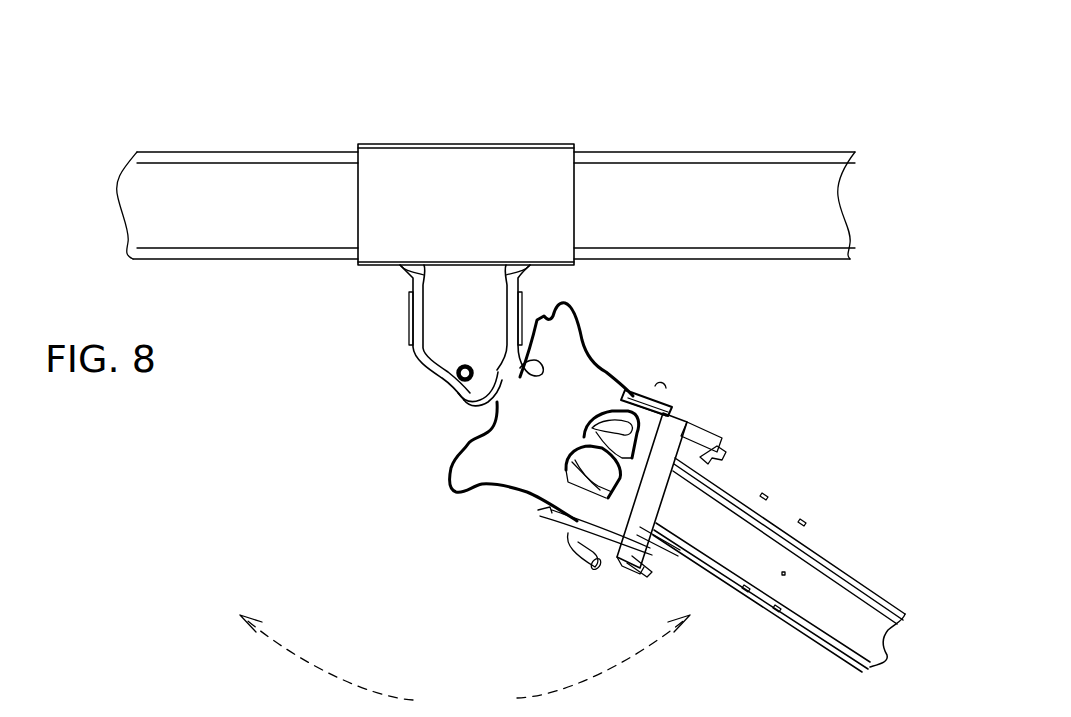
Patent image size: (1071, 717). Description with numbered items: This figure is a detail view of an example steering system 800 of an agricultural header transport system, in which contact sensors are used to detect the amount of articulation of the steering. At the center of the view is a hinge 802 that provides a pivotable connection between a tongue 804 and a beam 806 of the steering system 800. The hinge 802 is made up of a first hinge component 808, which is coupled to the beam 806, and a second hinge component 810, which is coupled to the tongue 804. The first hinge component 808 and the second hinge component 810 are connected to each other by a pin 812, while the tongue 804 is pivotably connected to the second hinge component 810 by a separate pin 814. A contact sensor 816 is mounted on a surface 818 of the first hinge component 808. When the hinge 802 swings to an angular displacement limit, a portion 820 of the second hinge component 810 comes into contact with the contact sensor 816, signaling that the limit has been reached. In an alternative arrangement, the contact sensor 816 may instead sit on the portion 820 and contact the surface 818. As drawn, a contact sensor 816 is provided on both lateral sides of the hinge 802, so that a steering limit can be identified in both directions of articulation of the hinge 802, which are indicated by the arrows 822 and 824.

The steering system 800 is at (351, 70).
The hinge 802 is at (412, 537).
The tongue 804 is at (835, 568).
The beam 806 is at (678, 192).
The first hinge component 808 is at (450, 395).
The second hinge component 810 is at (490, 490).
The pin 812 is at (458, 378).
The pin 814 is at (697, 423).
The contact sensor 816 is at (410, 312).
The surface 818 is at (530, 280).
The portion 820 is at (567, 303).
The arrow 822 is at (335, 660).
The arrow 824 is at (600, 668).